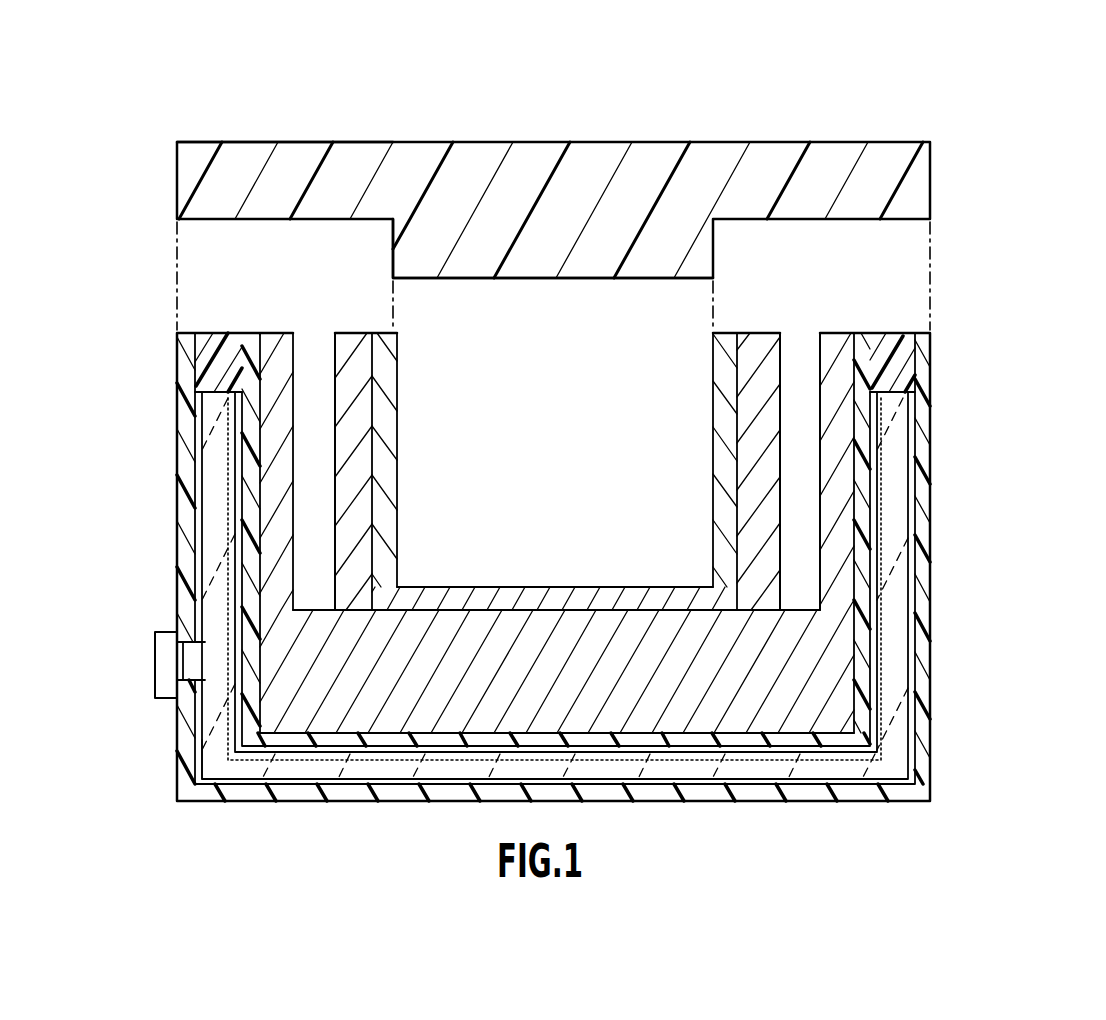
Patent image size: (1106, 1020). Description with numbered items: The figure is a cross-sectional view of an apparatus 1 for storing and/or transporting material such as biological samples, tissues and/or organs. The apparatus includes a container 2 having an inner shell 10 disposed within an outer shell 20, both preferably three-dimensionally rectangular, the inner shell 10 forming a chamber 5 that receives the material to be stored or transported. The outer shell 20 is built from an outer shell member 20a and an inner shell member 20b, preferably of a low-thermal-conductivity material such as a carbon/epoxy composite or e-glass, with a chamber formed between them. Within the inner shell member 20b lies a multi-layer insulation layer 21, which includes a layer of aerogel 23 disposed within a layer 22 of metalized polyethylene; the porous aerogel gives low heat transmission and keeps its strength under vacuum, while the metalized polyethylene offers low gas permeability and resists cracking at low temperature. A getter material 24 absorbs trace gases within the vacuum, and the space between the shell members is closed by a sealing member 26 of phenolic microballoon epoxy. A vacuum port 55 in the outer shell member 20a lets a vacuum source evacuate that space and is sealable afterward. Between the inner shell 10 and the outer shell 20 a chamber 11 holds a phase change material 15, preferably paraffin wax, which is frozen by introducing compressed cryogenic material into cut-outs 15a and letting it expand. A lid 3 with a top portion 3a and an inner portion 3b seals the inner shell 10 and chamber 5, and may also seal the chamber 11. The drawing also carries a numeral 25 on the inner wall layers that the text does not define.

The apparatus 1 is at (993, 93).
The container 2 is at (1006, 418).
The lid 3 is at (940, 187).
The top portion 3a is at (178, 152).
The inner portion 3b is at (413, 242).
The chamber 5 is at (573, 372).
The inner shell 10 is at (382, 352).
The chamber 11 is at (737, 330).
The phase change material 15 is at (832, 488).
The cut-outs 15a is at (317, 598).
The outer shell 20 is at (260, 328).
The outer shell member 20a is at (186, 462).
The inner shell member 20b is at (256, 556).
The insulation layer 21 is at (200, 746).
The layer of metalized polyethylene 22 is at (917, 628).
The layer of aerogel 23 is at (893, 580).
The getter material 24 is at (880, 703).
The inner liner 25 is at (882, 727).
The sealing member 26 is at (213, 355).
The vacuum port 55 is at (158, 661).